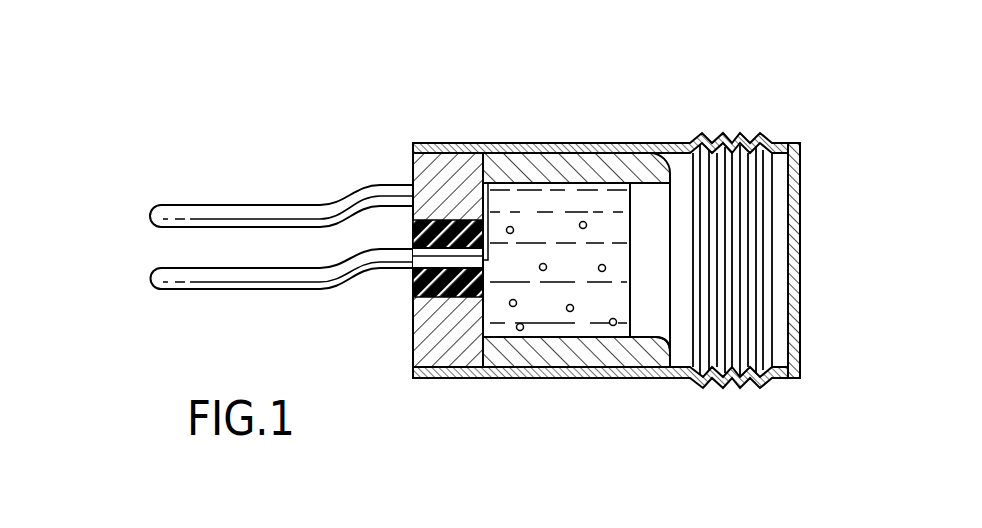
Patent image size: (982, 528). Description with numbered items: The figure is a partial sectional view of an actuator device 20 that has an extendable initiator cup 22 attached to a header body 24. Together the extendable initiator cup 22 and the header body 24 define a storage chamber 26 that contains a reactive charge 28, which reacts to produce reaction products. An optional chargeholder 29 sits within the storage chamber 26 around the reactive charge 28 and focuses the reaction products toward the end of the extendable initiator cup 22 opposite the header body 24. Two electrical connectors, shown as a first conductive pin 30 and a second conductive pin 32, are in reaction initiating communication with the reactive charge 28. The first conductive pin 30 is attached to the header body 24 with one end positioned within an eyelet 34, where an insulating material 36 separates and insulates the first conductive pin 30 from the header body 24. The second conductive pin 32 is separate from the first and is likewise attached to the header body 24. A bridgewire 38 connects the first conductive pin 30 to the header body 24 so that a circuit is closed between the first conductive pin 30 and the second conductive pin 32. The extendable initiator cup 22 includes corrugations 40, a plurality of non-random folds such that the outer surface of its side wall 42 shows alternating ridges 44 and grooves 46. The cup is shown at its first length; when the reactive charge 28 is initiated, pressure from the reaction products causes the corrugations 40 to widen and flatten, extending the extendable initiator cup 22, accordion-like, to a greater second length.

The actuator device 20 is at (322, 131).
The extendable initiator cup 22 is at (631, 146).
The header body 24 is at (486, 172).
The storage chamber 26 is at (643, 228).
The reactive charge 28 is at (588, 312).
The chargeholder 29 is at (648, 333).
The first conductive pin 30 is at (152, 275).
The second conductive pin 32 is at (152, 212).
The eyelet 34 is at (435, 220).
The insulating material 36 is at (447, 287).
The bridgewire 38 is at (488, 231).
The corrugations 40 is at (727, 125).
The side wall 42 is at (784, 380).
The ridges 44 is at (720, 388).
The grooves 46 is at (732, 388).